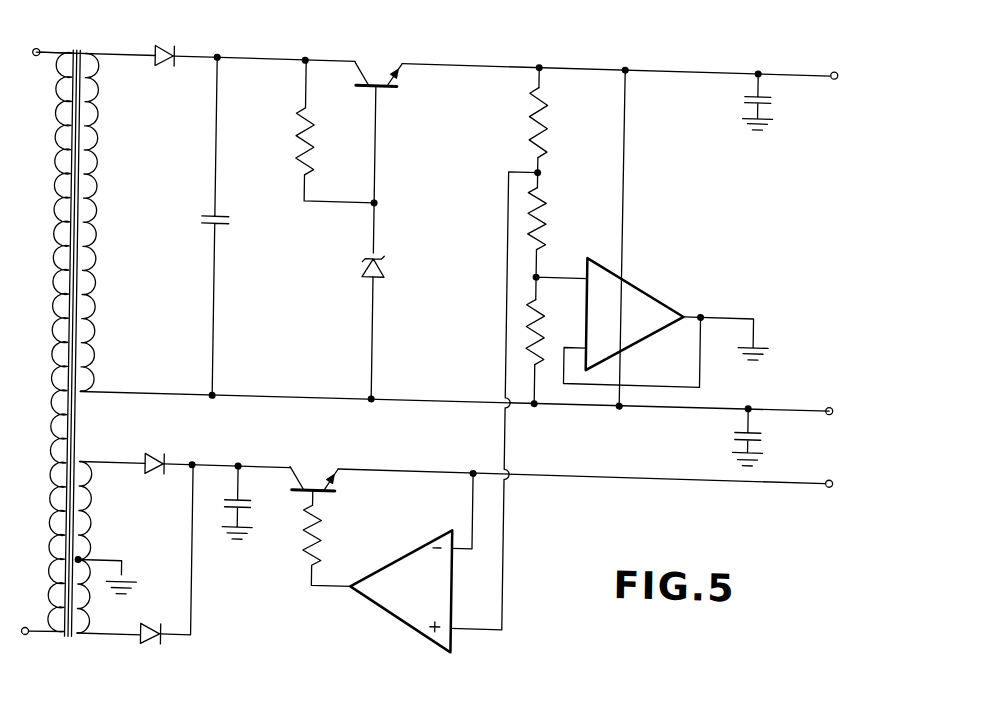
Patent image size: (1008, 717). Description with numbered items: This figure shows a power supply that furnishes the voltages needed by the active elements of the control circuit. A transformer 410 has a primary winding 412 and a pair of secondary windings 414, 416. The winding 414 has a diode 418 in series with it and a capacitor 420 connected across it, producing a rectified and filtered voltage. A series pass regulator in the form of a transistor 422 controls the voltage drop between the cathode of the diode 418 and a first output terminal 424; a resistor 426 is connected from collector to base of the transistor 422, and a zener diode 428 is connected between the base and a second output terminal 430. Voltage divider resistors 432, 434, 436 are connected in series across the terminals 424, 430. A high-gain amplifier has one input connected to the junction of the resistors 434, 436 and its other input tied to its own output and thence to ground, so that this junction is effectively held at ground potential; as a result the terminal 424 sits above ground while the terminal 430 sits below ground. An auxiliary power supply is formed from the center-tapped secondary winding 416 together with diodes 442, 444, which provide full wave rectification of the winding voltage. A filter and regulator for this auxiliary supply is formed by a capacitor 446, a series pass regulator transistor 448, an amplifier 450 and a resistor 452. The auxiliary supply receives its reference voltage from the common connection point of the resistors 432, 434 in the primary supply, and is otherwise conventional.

The transformer 410 is at (82, 45).
The primary winding 412 is at (69, 111).
The secondary winding 414 is at (99, 154).
The secondary winding 416 is at (96, 514).
The diode 418 is at (164, 40).
The capacitor 420 is at (208, 224).
The transistor 422 is at (406, 28).
The first output terminal 424 is at (838, 46).
The resistor 426 is at (314, 143).
The zener diode 428 is at (389, 246).
The second output terminal 430 is at (835, 380).
The voltage divider resistor 432 is at (531, 107).
The voltage divider resistor 434 is at (545, 222).
The voltage divider resistor 436 is at (535, 325).
The diode 442 is at (166, 421).
The diode 444 is at (162, 641).
The capacitor 446 is at (264, 432).
The series pass regulator transistor 448 is at (346, 426).
The amplifier 450 is at (369, 588).
The resistor 452 is at (330, 523).